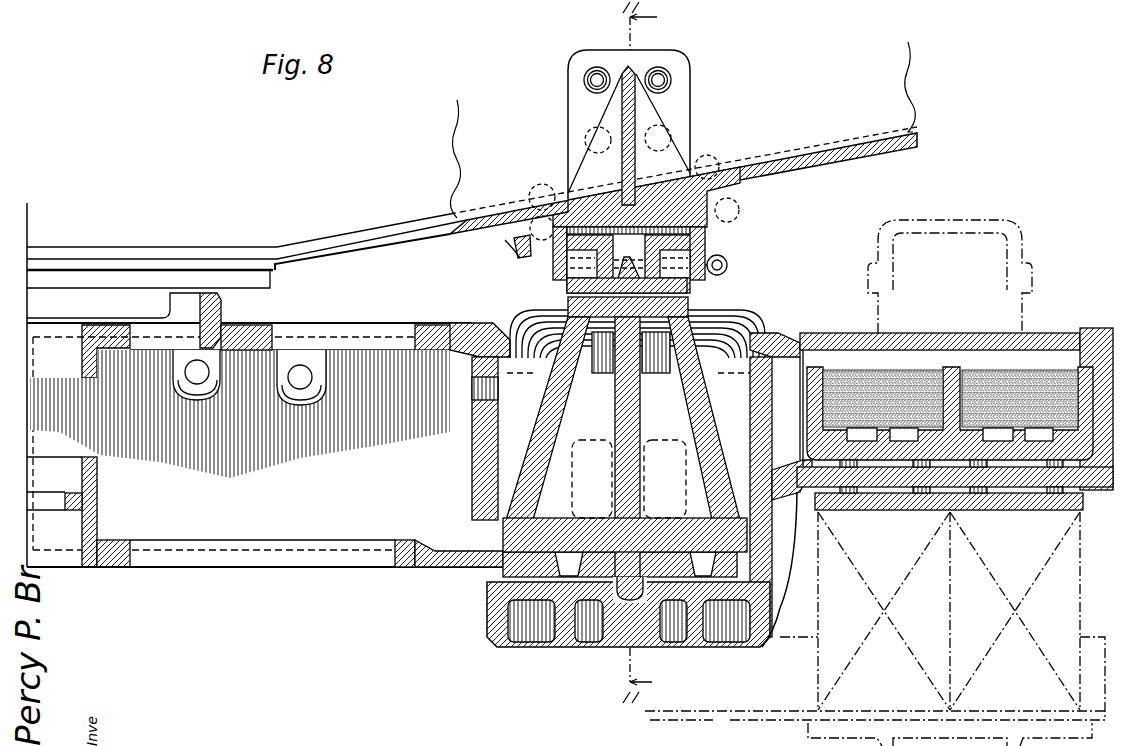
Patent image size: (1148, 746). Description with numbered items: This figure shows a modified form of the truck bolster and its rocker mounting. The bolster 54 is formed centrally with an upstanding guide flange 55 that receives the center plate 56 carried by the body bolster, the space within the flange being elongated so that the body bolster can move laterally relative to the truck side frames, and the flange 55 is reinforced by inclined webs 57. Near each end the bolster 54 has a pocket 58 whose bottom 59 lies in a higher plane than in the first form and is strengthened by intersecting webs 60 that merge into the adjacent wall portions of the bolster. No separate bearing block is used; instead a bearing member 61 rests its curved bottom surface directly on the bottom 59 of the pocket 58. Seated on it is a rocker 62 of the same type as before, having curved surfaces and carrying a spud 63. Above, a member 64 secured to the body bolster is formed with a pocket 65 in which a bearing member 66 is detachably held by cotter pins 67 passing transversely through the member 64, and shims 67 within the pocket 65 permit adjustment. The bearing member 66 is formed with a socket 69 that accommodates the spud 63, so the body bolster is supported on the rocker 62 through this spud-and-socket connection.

The bolster 54 is at (265, 385).
The upstanding guide flange 55 is at (222, 308).
The center plate 56 is at (148, 294).
The inclined webs 57 is at (255, 322).
The pocket 58 is at (516, 355).
The bottom 59 is at (460, 612).
The intersecting webs 60 is at (563, 653).
The bearing member 61 is at (500, 560).
The rocker 62 is at (625, 430).
The spud 63 is at (628, 292).
The member 64 is at (521, 243).
The pocket 65 is at (690, 240).
The bearing member 66 is at (569, 285).
The cotter pins 67 is at (706, 227).
The socket 69 is at (620, 257).